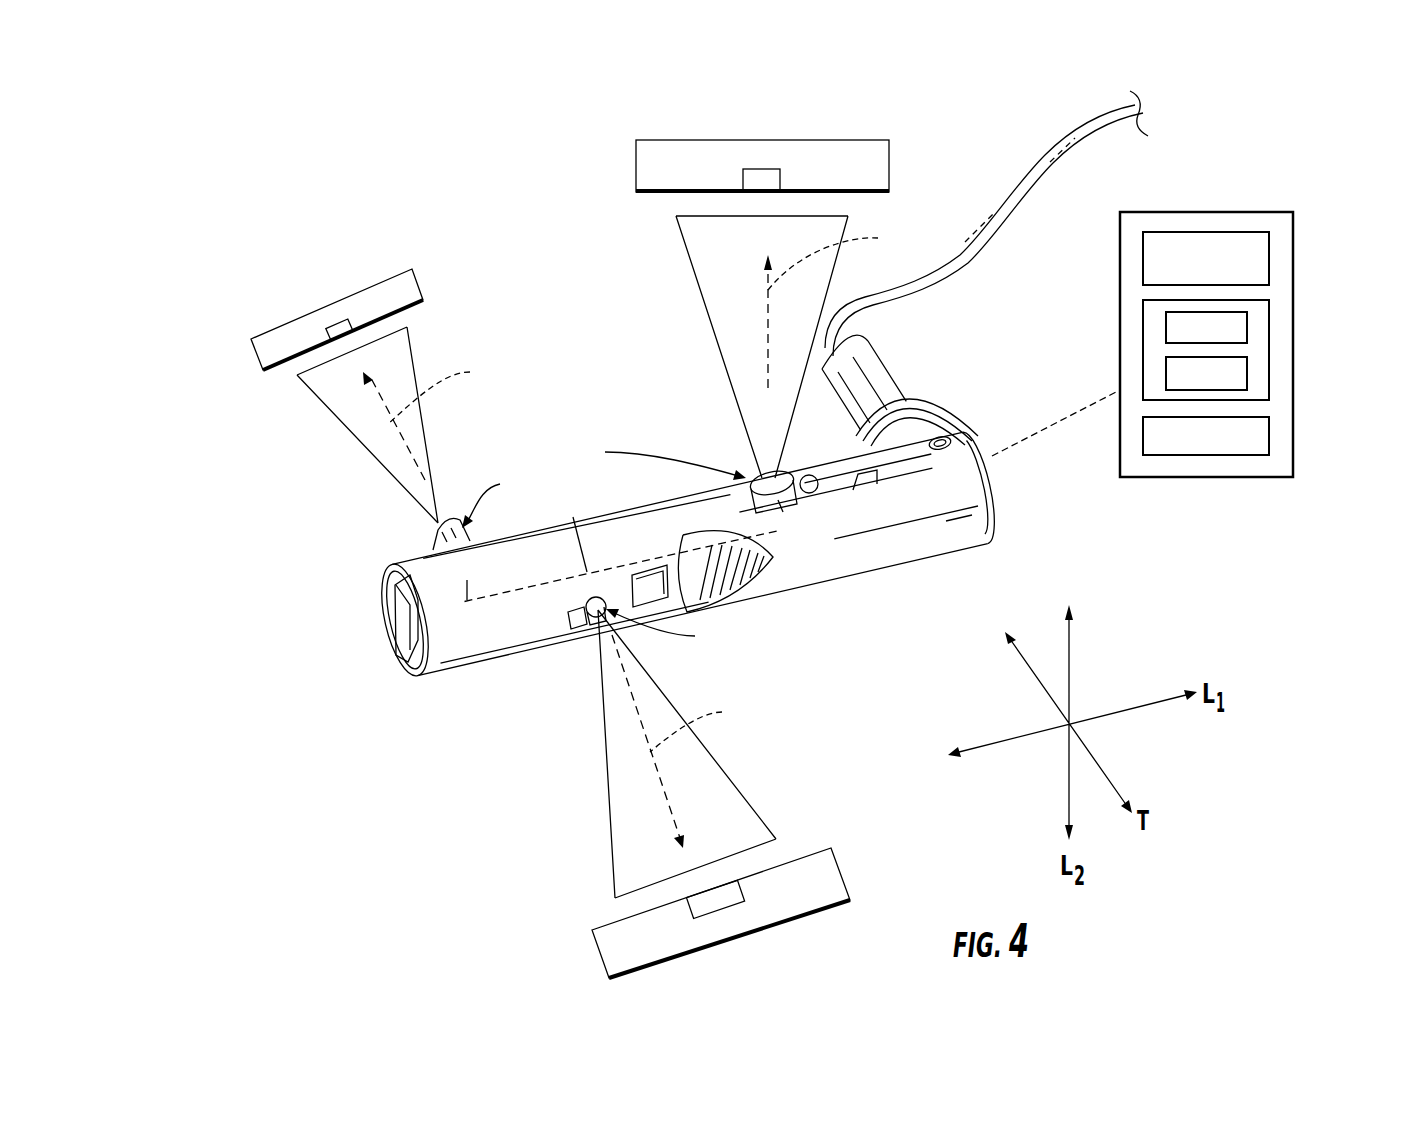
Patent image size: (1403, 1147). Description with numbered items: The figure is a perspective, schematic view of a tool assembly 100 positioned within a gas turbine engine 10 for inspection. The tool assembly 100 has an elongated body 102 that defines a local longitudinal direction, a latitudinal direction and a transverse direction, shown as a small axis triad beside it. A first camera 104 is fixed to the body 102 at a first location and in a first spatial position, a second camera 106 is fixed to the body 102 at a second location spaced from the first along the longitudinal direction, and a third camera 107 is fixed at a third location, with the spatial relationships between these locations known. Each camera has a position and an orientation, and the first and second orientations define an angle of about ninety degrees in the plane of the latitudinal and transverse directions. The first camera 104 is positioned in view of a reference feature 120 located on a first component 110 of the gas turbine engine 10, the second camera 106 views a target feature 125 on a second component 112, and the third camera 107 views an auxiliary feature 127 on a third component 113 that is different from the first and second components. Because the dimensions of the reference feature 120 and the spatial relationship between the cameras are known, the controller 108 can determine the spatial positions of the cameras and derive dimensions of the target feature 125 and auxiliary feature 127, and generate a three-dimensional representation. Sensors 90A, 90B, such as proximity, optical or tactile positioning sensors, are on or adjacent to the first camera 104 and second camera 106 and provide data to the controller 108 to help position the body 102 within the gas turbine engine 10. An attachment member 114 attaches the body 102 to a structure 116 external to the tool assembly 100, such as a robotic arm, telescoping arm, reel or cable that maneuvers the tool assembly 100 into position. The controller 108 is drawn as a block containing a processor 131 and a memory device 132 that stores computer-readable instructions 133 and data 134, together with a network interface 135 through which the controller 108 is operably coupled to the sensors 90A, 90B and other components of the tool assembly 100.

The gas turbine engine 10 is at (862, 104).
The tool assembly 100 is at (313, 649).
The body 102 is at (926, 510).
The first camera 104 is at (760, 480).
The second camera 106 is at (592, 620).
The third camera 107 is at (428, 540).
The sensor 90A is at (809, 474).
The sensor 90B is at (572, 626).
The controller 108 is at (1185, 212).
The first component 110 is at (648, 170).
The second component 112 is at (600, 932).
The third component 113 is at (392, 300).
The attachment member 114 is at (912, 395).
The structure 116 is at (1062, 148).
The reference feature 120 is at (766, 178).
The target feature 125 is at (715, 905).
The auxiliary feature 127 is at (340, 322).
The processor 131 is at (1247, 262).
The memory device 132 is at (1258, 328).
The computer-readable instructions 133 is at (1206, 329).
The data 134 is at (1206, 374).
The network interface 135 is at (1247, 432).